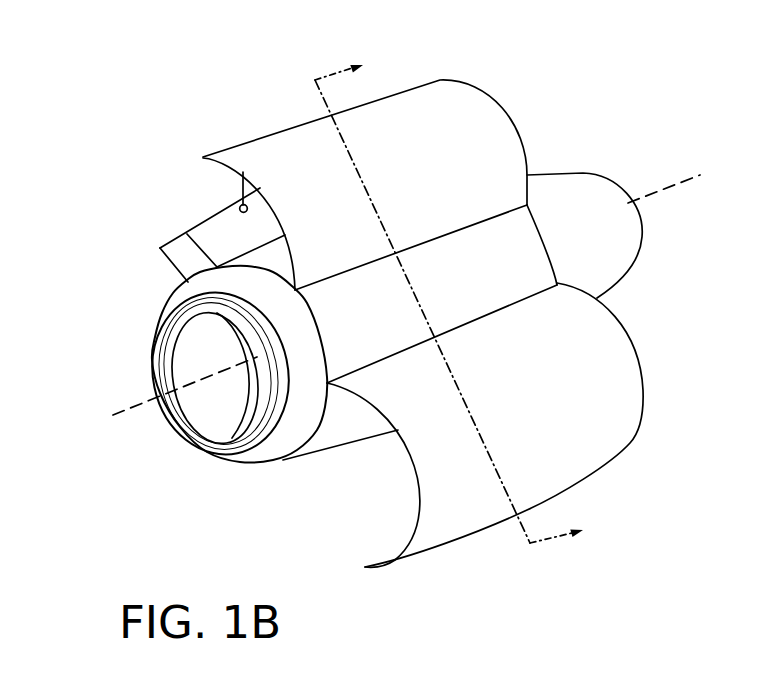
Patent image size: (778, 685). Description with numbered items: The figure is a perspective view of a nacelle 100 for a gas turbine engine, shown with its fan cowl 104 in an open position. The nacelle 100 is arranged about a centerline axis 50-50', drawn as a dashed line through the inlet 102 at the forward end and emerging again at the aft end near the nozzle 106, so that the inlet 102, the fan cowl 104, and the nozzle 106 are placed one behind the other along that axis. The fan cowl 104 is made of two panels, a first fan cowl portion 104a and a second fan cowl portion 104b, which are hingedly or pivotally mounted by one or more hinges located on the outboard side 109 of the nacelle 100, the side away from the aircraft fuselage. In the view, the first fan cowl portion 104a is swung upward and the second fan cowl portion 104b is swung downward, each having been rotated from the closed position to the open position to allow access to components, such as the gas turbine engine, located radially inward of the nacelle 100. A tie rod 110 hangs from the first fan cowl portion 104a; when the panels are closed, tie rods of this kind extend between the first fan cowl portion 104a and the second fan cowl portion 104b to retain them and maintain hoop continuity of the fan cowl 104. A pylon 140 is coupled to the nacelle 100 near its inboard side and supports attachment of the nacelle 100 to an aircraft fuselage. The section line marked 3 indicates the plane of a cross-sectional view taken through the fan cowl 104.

The nacelle 100 is at (57, 128).
The inlet 102 is at (291, 440).
The fan cowl 104 is at (436, 280).
The first fan cowl portion 104a is at (272, 150).
The second fan cowl portion 104b is at (442, 527).
The nozzle 106 is at (578, 188).
The outboard side 109 is at (513, 290).
The tie rod 110 is at (243, 181).
The pylon 140 is at (175, 250).
The centerline axis 50 is at (178, 373).
The centerline axis 50' is at (664, 150).
The section line 3- 3 is at (457, 298).